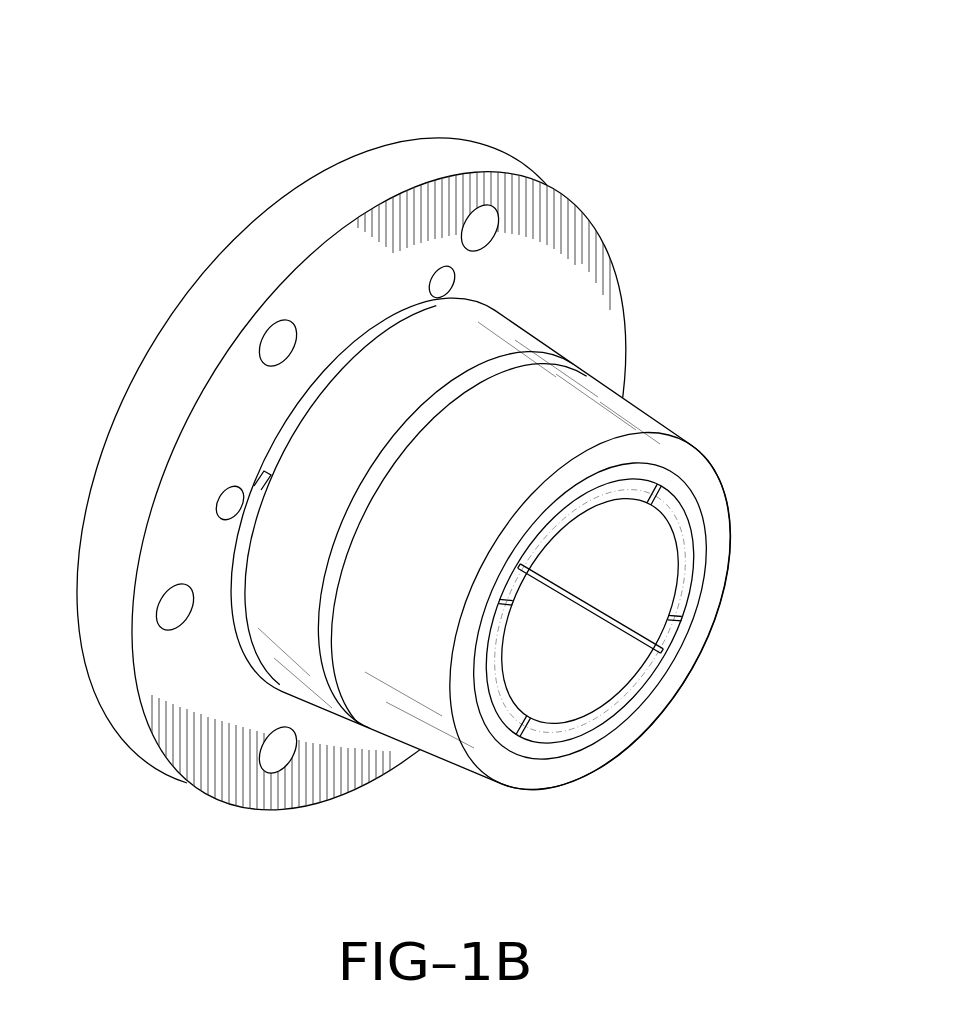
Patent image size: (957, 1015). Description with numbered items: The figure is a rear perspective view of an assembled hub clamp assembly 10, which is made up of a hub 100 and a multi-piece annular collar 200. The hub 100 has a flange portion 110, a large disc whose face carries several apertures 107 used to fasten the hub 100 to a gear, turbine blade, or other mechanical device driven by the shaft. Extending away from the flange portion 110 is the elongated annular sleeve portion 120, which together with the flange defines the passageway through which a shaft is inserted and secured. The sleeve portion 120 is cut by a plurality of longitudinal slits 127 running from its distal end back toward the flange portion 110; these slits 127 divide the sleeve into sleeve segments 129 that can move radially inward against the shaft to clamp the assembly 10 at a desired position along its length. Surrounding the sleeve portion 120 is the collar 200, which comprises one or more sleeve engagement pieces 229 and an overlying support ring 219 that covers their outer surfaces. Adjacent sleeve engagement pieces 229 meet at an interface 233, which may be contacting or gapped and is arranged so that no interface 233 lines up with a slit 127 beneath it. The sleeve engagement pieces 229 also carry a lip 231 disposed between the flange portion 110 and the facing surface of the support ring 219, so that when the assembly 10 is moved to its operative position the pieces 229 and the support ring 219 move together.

The hub clamp assembly 10 is at (75, 129).
The hub 100 is at (247, 188).
The apertures 107 is at (489, 221).
The flange portion 110 is at (208, 698).
The lip 231 is at (357, 343).
The annular collar 200 is at (651, 355).
The support ring 219 is at (603, 419).
The sleeve engagement pieces 229 is at (643, 472).
The sleeve segments 129 is at (683, 535).
The annular sleeve portion 120 is at (591, 668).
The interface 233 is at (687, 619).
The longitudinal slits 127 is at (621, 619).